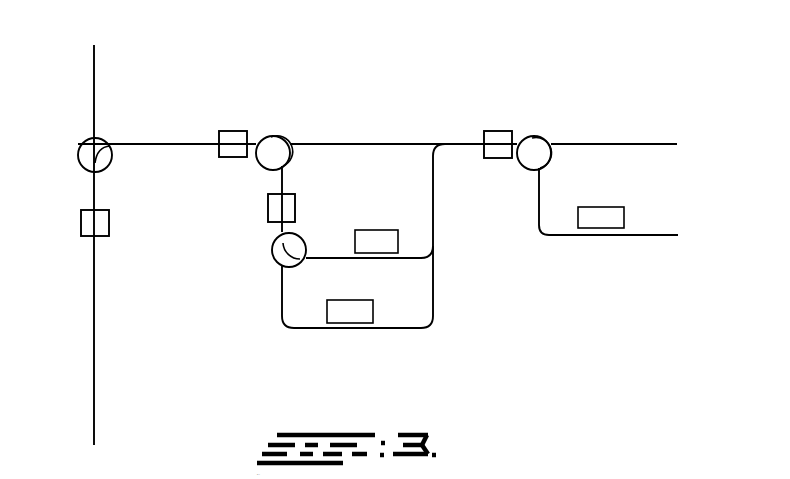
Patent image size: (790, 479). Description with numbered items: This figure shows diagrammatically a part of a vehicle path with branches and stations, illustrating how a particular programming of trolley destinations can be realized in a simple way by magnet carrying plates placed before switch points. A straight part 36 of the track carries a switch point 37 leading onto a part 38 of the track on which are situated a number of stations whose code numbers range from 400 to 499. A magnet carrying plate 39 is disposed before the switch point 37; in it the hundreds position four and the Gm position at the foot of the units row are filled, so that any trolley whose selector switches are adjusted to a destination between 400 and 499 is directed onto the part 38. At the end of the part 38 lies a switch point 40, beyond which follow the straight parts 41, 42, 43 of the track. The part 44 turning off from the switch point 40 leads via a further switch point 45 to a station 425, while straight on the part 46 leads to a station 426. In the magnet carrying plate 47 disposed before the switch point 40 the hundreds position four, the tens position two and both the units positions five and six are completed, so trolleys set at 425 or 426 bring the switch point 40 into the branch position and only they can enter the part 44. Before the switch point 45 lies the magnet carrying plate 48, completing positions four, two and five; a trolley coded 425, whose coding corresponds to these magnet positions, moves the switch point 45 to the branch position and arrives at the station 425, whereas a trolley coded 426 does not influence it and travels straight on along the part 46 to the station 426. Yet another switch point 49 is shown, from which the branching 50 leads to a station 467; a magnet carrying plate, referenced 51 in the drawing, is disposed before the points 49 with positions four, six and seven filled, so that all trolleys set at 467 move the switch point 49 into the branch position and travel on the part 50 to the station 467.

The straight part of the track 36 is at (94, 408).
The switch point 37 is at (88, 141).
The part of the track 38 is at (161, 143).
The magnet carrying plate 39 is at (83, 223).
The switch point 40 is at (290, 152).
The straight part of the track 41 is at (358, 143).
The straight part of the track 42 is at (455, 144).
The straight part of the track 43 is at (605, 143).
The part of the track 44 is at (282, 178).
The switch point 45 is at (277, 267).
The part of the track 46 is at (282, 300).
The magnet carrying plate 47 is at (220, 138).
The magnet carrying plate 48 is at (288, 205).
The switch point 49 is at (542, 142).
The branching part of the track 50 is at (539, 203).
The heater 51 is at (498, 138).
The station code number 400 is at (140, 186).
The station code number 499 is at (155, 215).
The station 425 is at (376, 241).
The station 426 is at (350, 311).
The station 467 is at (601, 217).